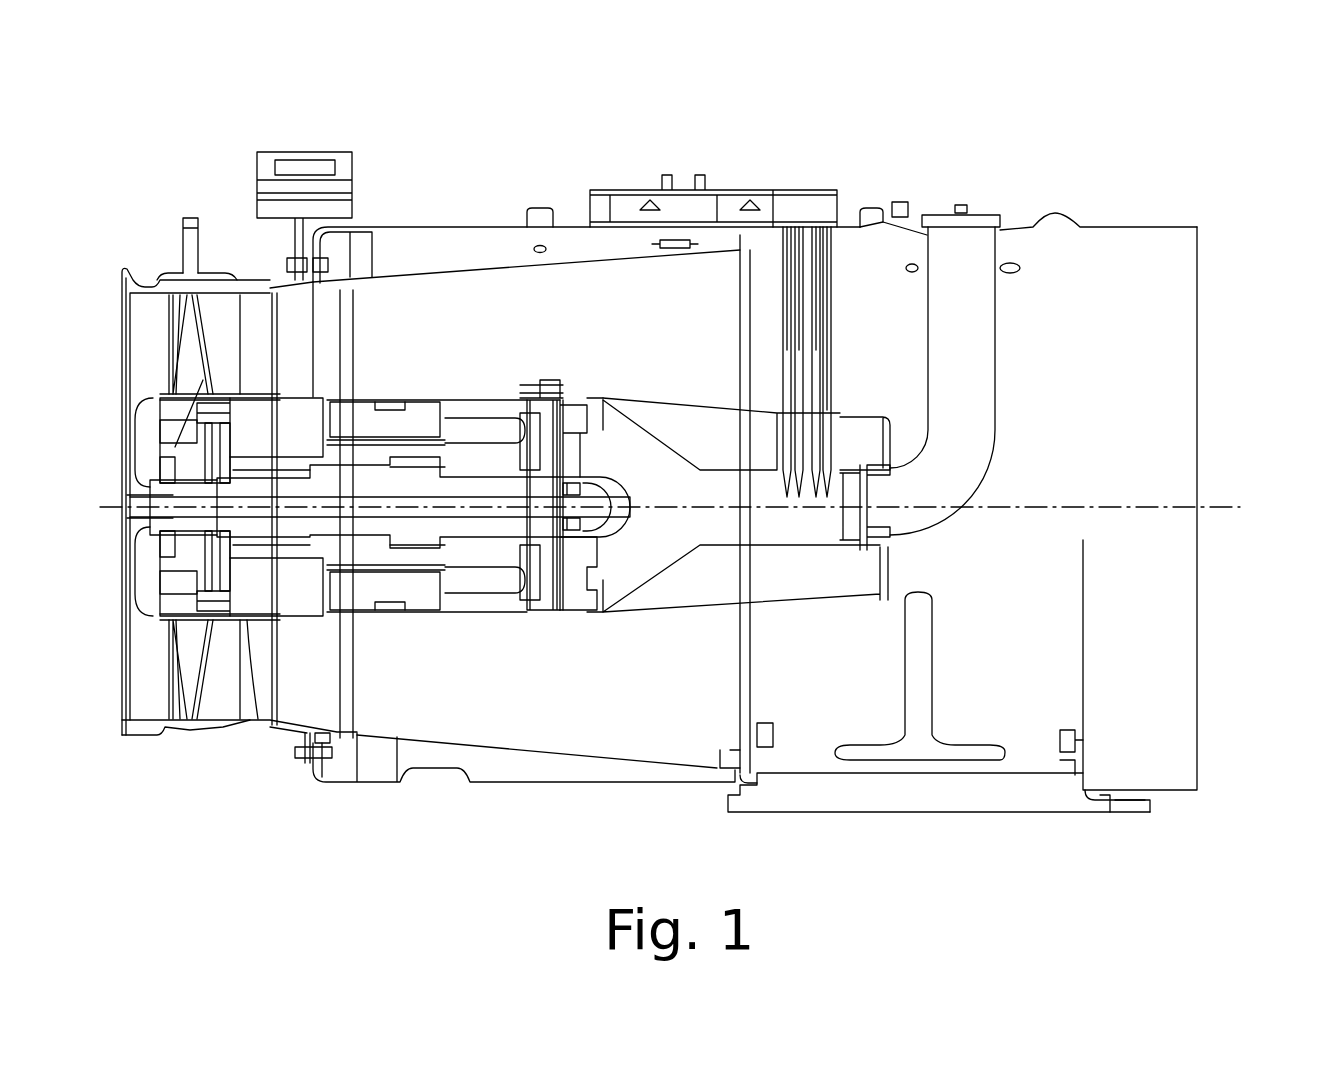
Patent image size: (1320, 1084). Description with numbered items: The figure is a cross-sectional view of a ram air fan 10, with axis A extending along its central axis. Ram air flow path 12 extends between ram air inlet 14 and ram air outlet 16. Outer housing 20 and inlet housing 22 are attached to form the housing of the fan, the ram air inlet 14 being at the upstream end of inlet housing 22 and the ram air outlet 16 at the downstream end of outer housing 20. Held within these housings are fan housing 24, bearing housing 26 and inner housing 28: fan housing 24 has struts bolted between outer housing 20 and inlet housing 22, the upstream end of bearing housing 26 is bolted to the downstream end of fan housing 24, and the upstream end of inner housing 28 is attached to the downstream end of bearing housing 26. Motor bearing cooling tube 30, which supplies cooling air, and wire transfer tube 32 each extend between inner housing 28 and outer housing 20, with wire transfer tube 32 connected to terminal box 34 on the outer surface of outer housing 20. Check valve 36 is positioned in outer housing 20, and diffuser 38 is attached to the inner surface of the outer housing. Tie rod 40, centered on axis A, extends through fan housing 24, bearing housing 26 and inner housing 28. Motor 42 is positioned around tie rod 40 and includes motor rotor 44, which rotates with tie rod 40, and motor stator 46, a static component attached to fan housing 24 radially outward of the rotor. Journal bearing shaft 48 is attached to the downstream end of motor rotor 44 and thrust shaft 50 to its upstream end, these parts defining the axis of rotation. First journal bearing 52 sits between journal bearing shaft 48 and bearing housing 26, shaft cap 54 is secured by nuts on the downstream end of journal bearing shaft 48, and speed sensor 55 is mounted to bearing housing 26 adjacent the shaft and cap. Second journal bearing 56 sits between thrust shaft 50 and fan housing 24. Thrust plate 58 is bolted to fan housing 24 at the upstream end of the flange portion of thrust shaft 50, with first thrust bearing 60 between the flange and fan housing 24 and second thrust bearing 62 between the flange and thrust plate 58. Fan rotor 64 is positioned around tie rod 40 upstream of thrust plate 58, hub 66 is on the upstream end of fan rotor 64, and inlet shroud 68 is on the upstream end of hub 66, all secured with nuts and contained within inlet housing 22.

The ram air fan 10 is at (178, 148).
The ram air flow path 12 is at (532, 327).
The ram air inlet 14 is at (125, 322).
The ram air outlet 16 is at (1200, 312).
The outer housing 20 is at (340, 783).
The inlet housing 22 is at (193, 733).
The fan housing 24 is at (362, 400).
The bearing housing 26 is at (543, 395).
The inner housing 28 is at (667, 403).
The motor bearing cooling tube 30 is at (993, 332).
The wire transfer tube 32 is at (827, 308).
The terminal box 34 is at (683, 190).
The check valve 36 is at (960, 813).
The diffuser 38 is at (537, 750).
The tie rod 40 is at (623, 510).
The motor 42 is at (386, 610).
The motor rotor 44 is at (405, 552).
The motor stator 46 is at (423, 410).
The journal bearing shaft 48 is at (590, 440).
The thrust shaft 50 is at (248, 477).
The first journal bearing 52 is at (537, 550).
The shaft cap 54 is at (600, 480).
The speed sensor 55 is at (580, 553).
The second journal bearing 56 is at (270, 550).
The thrust plate 58 is at (197, 560).
The first thrust bearing 60 is at (245, 483).
The second thrust bearing 62 is at (207, 447).
The fan rotor 64 is at (187, 652).
The hub 66 is at (182, 435).
The inlet shroud 68 is at (138, 405).
The axis A is at (1233, 507).